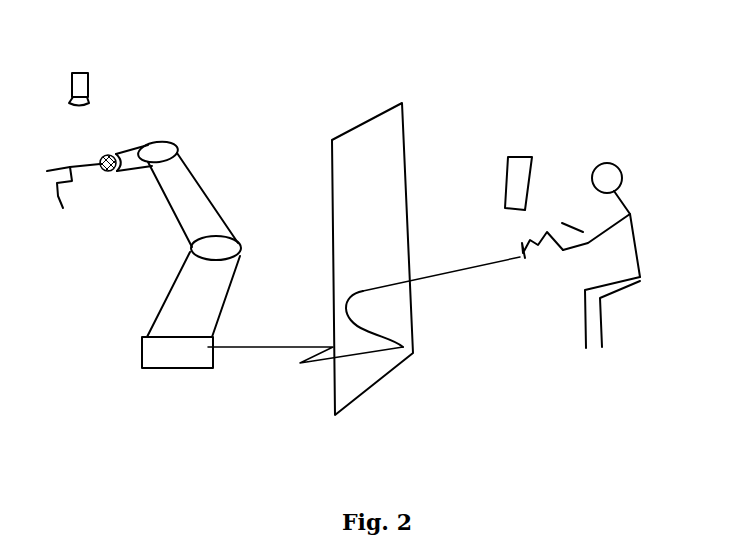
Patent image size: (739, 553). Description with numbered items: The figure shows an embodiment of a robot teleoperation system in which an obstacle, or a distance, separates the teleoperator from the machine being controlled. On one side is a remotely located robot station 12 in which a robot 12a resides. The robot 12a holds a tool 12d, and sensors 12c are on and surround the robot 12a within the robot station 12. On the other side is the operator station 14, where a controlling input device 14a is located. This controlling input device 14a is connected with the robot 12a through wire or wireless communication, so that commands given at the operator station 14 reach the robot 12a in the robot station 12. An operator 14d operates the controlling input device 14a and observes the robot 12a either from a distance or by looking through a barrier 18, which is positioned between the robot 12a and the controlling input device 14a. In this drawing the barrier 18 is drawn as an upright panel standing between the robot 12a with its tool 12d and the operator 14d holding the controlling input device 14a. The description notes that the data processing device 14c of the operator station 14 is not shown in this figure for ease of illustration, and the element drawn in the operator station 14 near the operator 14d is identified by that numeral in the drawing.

The robot station 12 is at (160, 75).
The robot 12a is at (170, 310).
The sensors 12c is at (215, 236).
The tool 12d is at (72, 185).
The barrier 18 is at (322, 175).
The operator station 14 is at (525, 110).
The controlling input device 14a is at (522, 268).
The data processing device 14c is at (505, 195).
The operator 14d is at (635, 171).